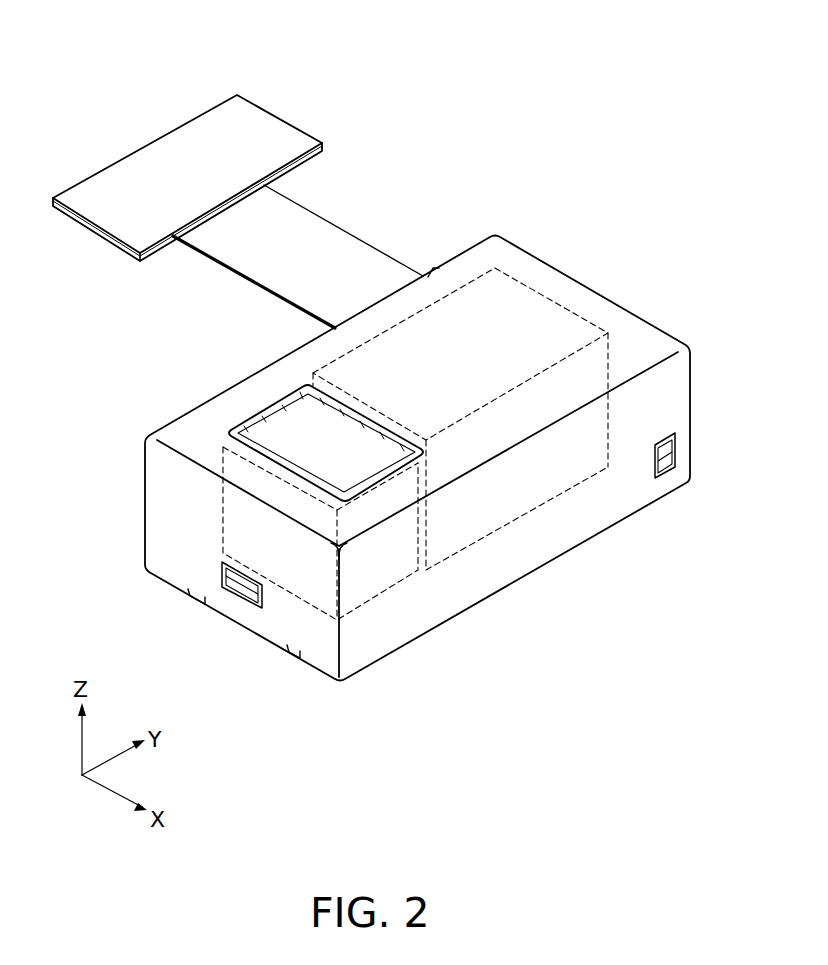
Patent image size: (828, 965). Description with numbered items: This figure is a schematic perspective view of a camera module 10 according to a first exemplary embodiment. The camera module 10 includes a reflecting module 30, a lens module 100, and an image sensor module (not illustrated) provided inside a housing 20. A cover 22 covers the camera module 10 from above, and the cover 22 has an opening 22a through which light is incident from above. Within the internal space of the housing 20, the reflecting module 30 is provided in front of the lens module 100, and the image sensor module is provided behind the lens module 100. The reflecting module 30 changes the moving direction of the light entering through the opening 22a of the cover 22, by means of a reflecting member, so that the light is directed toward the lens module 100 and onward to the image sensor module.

The camera module 10 is at (348, 35).
The housing 20 is at (385, 632).
The cover 22 is at (190, 435).
The opening 22a is at (318, 438).
The reflecting module 30 is at (380, 562).
The lens module 100 is at (497, 490).